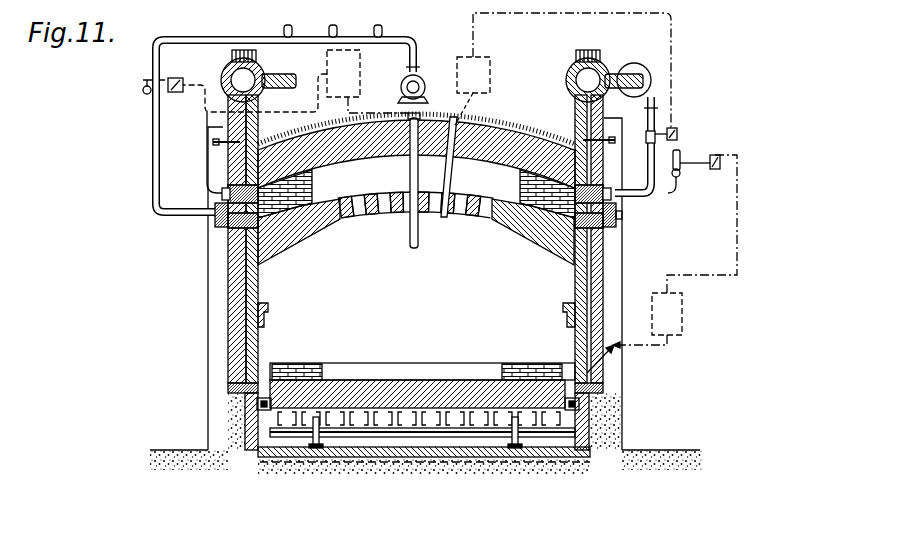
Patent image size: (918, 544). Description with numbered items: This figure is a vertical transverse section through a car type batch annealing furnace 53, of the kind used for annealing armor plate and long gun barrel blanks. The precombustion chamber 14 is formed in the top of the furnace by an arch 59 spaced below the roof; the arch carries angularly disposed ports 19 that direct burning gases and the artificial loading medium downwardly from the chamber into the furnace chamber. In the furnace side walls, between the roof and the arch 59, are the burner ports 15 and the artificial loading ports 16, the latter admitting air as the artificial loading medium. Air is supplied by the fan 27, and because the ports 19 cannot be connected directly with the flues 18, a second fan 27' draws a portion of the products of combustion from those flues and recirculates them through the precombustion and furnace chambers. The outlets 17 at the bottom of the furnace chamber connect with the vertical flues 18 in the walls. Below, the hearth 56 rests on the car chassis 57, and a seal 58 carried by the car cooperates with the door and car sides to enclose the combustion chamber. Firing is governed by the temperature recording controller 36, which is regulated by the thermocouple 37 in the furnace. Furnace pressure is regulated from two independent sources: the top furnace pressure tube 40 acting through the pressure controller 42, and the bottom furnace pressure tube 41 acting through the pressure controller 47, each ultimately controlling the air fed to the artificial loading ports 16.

The precombustion chamber 14 is at (363, 190).
The burner ports 15 is at (223, 228).
The artificial loading ports 16 is at (224, 195).
The outlets 17 is at (578, 373).
The vertical flues 18 is at (247, 82).
The ports 19 is at (404, 204).
The fan 27 is at (400, 81).
The fan 27' is at (662, 115).
The temperature recording controller 36 is at (276, 121).
The thermocouple 37 is at (410, 243).
The top furnace pressure tube 40 is at (450, 178).
The bottom furnace pressure tube 41 is at (618, 362).
The pressure controller 42 is at (563, 70).
The pressure controller 47 is at (675, 251).
The car type batch annealing furnace 53 is at (242, 320).
The hearth 56 is at (418, 363).
The car chassis 57 is at (397, 437).
The seal 58 is at (258, 403).
The arch 59 is at (303, 233).